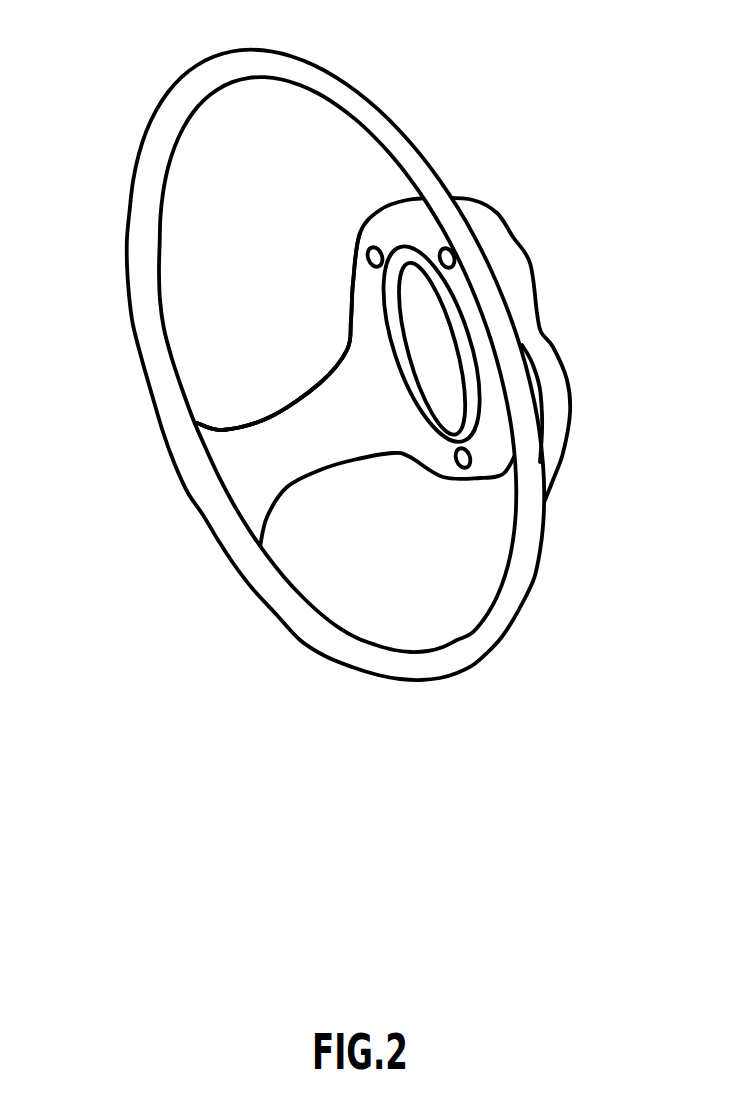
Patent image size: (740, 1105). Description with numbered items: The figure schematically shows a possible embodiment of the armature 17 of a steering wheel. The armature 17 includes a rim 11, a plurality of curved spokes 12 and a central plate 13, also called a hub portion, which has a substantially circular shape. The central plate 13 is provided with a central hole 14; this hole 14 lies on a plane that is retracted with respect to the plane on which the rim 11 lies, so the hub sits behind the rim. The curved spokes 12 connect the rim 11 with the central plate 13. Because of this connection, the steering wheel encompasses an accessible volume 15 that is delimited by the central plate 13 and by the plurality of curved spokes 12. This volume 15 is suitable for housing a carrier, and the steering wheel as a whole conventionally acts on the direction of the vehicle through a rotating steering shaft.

The rim 11 is at (147, 273).
The curved spokes 12 is at (263, 467).
The central plate 13 is at (413, 230).
The central hole 14 is at (433, 327).
The accessible volume 15 is at (272, 142).
The armature 17 is at (345, 341).